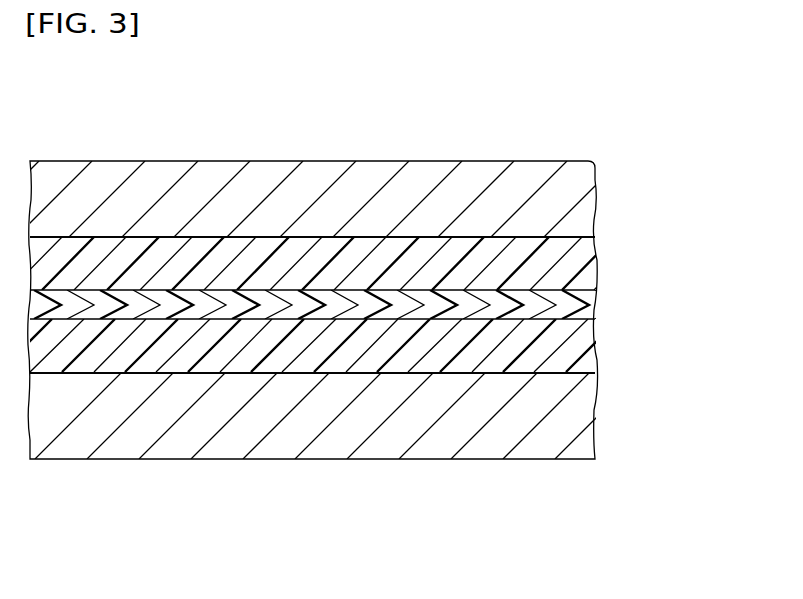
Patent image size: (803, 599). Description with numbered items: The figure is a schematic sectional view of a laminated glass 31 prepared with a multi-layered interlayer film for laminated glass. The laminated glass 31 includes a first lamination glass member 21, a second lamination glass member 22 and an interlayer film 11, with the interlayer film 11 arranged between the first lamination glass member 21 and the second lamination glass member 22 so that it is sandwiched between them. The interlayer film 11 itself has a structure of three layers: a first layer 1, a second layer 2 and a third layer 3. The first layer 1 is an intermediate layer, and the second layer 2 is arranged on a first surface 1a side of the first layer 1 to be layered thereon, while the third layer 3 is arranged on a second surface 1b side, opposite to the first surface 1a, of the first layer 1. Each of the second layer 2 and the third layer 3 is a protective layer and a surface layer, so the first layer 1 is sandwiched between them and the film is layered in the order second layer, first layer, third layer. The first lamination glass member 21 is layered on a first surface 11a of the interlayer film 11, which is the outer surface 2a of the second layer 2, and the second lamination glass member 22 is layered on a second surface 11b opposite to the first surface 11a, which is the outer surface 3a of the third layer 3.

The laminated glass 31 is at (152, 127).
The second lamination glass member 22 is at (598, 193).
The first lamination glass member 21 is at (597, 402).
The interlayer film 11 is at (238, 235).
The first surface of the interlayer film 11a is at (323, 373).
The second surface of the interlayer film 11b is at (323, 237).
The first layer 1 is at (599, 305).
The first surface of the first layer 1a is at (405, 319).
The second surface of the first layer 1b is at (405, 290).
The second layer 2 is at (599, 347).
The outer surface of the second layer 2a is at (517, 373).
The third layer 3 is at (599, 265).
The outer surface of the third layer 3a is at (522, 237).